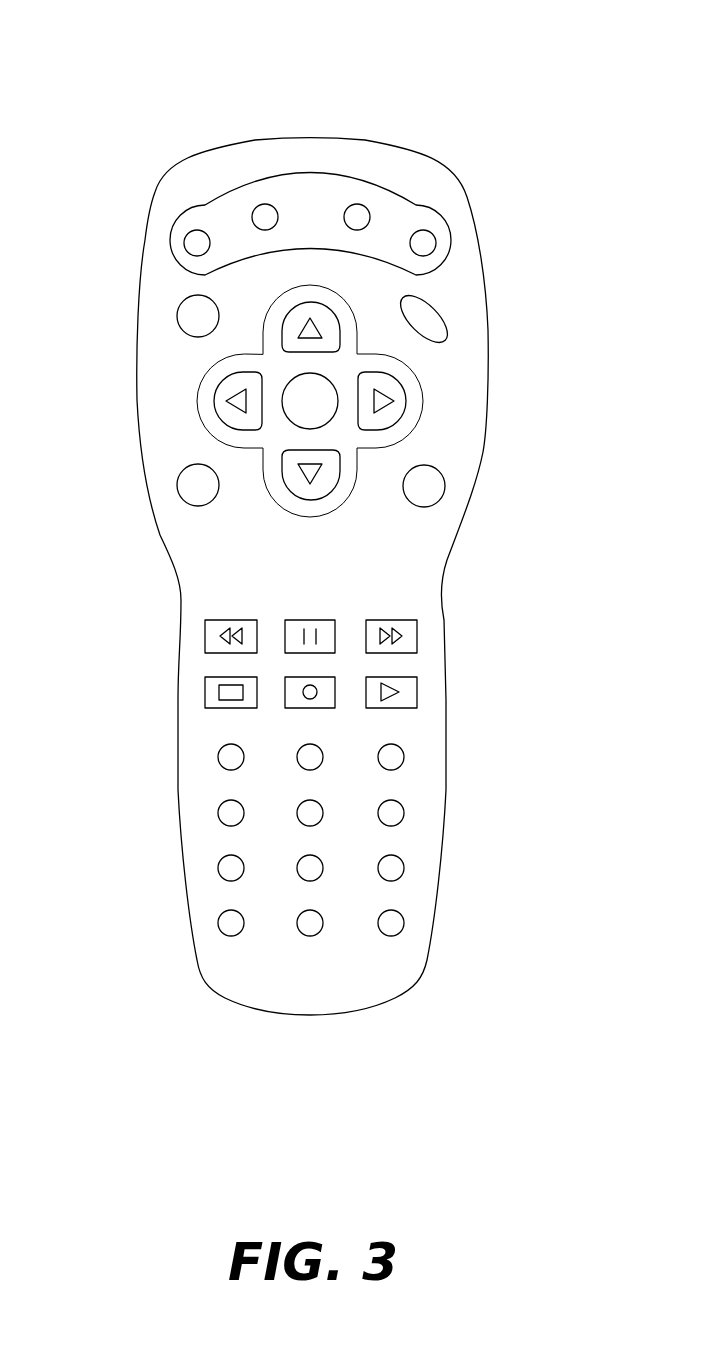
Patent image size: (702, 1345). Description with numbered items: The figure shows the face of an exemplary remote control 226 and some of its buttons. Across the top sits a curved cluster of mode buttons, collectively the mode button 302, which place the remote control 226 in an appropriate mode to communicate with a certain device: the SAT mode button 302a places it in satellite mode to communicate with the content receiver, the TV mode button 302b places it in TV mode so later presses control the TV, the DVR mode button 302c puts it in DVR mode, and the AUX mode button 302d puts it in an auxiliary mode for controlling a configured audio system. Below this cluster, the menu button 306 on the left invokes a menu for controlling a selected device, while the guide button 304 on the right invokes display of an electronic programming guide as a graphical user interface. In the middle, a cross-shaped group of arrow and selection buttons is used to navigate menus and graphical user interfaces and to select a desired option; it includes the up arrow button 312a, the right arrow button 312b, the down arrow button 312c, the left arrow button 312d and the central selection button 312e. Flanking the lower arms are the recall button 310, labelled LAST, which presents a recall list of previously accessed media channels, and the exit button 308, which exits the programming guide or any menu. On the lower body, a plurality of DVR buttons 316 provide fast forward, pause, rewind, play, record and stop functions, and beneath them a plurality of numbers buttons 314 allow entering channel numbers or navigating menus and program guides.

The remote control 226 is at (508, 44).
The mode button 302 is at (215, 195).
The SAT mode button 302a is at (184, 241).
The TV mode button 302b is at (265, 204).
The DVR mode button 302c is at (357, 204).
The AUX mode button 302d is at (437, 240).
The guide button 304 is at (437, 307).
The menu button 306 is at (178, 315).
The exit button 308 is at (446, 484).
The recall button 310 is at (178, 483).
The up arrow button 312a is at (311, 302).
The right arrow button 312b is at (406, 401).
The down arrow button 312c is at (308, 498).
The left arrow button 312d is at (214, 399).
The selection button 312e is at (287, 378).
The numbers buttons 314 is at (180, 783).
The DVR buttons 316 is at (180, 656).